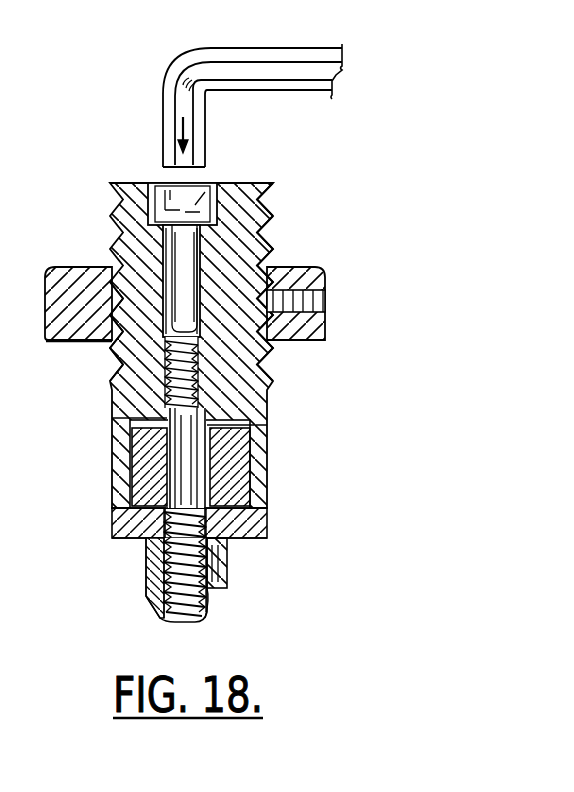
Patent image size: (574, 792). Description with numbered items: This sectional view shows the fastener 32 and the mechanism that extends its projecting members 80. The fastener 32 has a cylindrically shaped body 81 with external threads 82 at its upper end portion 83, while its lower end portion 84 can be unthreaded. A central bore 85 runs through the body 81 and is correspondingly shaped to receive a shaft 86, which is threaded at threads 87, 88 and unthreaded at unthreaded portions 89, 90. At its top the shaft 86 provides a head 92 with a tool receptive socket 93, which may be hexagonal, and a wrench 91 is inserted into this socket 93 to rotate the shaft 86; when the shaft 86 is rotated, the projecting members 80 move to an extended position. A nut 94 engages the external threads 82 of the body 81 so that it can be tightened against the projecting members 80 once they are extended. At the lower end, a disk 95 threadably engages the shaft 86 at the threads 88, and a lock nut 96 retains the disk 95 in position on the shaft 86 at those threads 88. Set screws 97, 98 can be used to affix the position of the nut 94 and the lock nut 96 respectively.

The fastener 32 is at (353, 228).
The projecting members 80 is at (240, 471).
The body 81 is at (243, 182).
The external threads 82 is at (263, 228).
The upper end portion 83 is at (256, 196).
The lower end portion 84 is at (267, 492).
The central bore 85 is at (120, 360).
The shaft 86 is at (174, 253).
The threads 87 is at (200, 384).
The threads 88 is at (165, 615).
The unthreaded portion 89 is at (187, 262).
The unthreaded portion 90 is at (113, 422).
The wrench 91 is at (256, 50).
The head 92 is at (157, 182).
The tool receptive socket 93 is at (201, 182).
The nut 94 is at (326, 322).
The disk 95 is at (118, 540).
The lock nut 96 is at (226, 586).
The set screw 97 is at (326, 300).
The set screw 98 is at (228, 558).